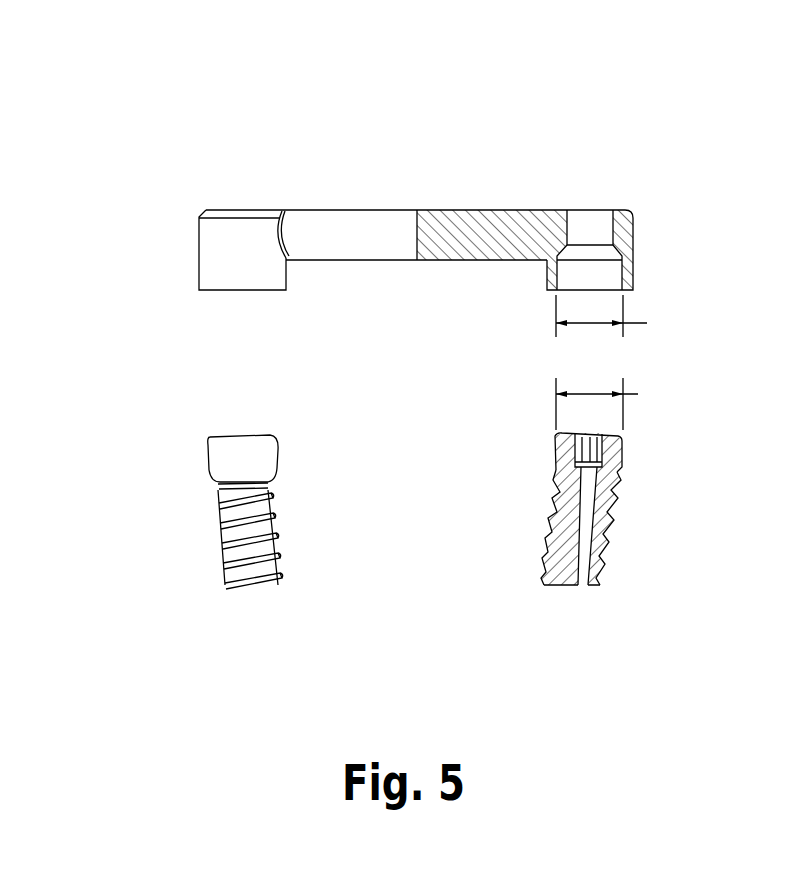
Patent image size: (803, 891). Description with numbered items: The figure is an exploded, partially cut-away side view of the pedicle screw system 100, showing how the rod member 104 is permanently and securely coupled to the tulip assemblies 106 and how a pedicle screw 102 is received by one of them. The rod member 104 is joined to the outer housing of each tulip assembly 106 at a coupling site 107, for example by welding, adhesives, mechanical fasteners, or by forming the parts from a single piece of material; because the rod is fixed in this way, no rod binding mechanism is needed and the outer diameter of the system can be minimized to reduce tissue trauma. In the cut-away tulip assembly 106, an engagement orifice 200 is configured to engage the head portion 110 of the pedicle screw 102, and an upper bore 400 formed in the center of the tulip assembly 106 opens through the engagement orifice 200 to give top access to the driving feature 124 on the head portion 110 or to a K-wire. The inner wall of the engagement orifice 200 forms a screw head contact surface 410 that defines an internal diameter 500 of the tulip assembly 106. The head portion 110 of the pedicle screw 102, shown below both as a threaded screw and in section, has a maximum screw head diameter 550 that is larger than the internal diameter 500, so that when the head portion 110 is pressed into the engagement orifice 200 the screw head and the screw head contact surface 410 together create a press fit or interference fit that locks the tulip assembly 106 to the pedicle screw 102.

The pedicle screw system 100 is at (144, 151).
The pedicle screw 102 is at (174, 526).
The rod member 104 is at (400, 210).
The tulip assembly 106 is at (211, 250).
The coupling site 107 is at (280, 210).
The head portion 110 is at (252, 453).
The driving feature 124 is at (577, 433).
The engagement orifice 200 is at (248, 302).
The upper bore 400 is at (595, 191).
The screw head contact surface 410 is at (556, 292).
The internal diameter 500 is at (625, 316).
The maximum screw head diameter 550 is at (622, 404).